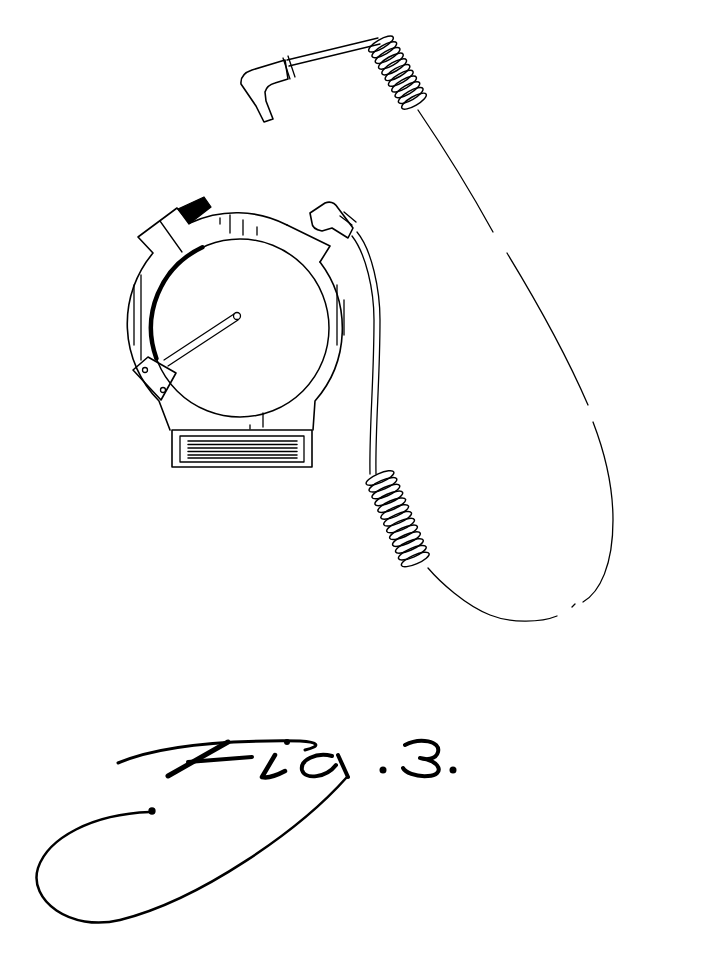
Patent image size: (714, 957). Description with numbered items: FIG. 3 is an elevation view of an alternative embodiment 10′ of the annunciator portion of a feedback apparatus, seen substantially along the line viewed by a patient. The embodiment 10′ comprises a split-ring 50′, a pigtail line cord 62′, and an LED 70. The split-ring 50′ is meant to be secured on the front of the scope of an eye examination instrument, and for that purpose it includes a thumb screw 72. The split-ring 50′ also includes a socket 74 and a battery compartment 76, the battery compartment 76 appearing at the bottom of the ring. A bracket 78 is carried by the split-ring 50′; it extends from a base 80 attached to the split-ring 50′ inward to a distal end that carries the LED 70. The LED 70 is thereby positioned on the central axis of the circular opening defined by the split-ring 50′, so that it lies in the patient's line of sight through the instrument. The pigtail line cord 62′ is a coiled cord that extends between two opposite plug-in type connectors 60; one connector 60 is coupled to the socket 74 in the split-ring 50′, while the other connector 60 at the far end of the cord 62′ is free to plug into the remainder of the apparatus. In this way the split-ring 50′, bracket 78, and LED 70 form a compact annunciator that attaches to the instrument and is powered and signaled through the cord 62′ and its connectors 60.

The annunciator portion embodiment 10′ is at (117, 178).
The split-ring 50′ is at (132, 294).
The plug-in type connector 60 is at (252, 72).
The pigtail line cord 62′ is at (405, 504).
The LED 70 is at (241, 318).
The thumb screw 72 is at (203, 170).
The socket 74 is at (300, 224).
The battery compartment 76 is at (208, 456).
The bracket 78 is at (200, 344).
The base 80 is at (148, 390).